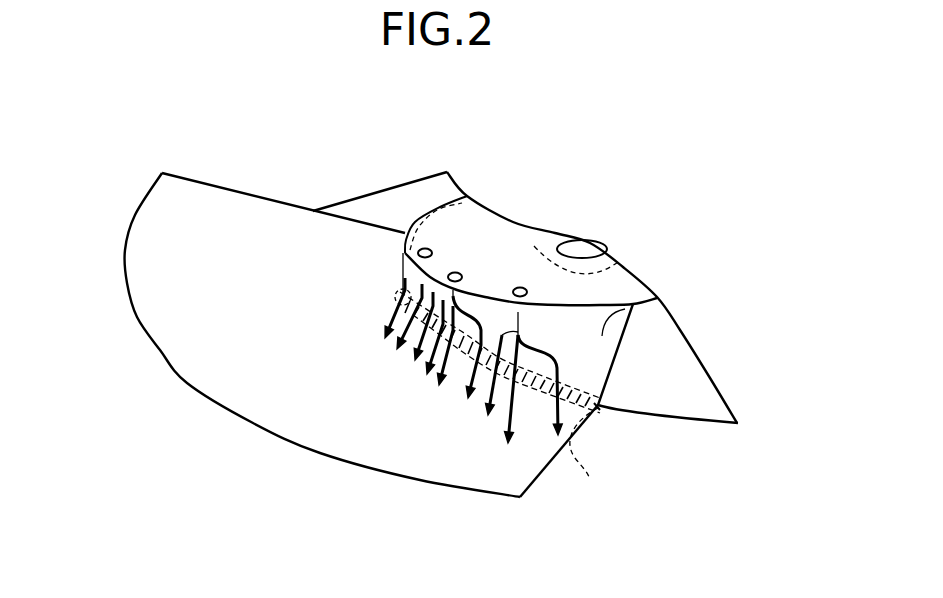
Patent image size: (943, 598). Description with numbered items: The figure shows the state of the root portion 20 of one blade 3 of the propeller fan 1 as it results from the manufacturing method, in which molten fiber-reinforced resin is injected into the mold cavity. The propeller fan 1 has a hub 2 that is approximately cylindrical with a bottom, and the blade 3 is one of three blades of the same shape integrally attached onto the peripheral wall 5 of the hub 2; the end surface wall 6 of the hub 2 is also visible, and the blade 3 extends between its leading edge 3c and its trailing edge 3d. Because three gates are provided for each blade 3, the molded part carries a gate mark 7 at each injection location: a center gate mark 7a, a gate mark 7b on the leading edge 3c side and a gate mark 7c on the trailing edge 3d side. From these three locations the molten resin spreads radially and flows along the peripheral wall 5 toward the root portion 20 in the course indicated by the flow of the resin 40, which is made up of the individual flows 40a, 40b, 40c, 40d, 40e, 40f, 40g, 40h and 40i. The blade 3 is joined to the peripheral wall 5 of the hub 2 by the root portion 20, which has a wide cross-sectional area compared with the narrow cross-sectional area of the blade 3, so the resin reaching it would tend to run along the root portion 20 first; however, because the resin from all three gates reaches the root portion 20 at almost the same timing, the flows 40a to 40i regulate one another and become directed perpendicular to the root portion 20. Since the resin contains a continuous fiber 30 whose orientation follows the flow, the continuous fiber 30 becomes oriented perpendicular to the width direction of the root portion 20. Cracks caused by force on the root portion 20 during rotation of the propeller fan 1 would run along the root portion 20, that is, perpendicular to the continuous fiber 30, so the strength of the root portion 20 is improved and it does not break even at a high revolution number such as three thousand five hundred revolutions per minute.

The propeller fan 1 is at (235, 174).
The hub 2 is at (600, 352).
The blade 3 is at (242, 360).
The leading edge 3c is at (538, 480).
The trailing edge 3d is at (282, 200).
The peripheral wall 5 is at (637, 307).
The end surface wall 6 is at (550, 280).
The gate mark 7 is at (517, 138).
The gate mark 7a is at (455, 271).
The gate mark 7b is at (520, 286).
The gate mark 7c is at (425, 246).
The root portion 20 is at (586, 456).
The continuous fiber 30 is at (597, 417).
The flow of the resin 40 is at (404, 283).
The flow of the resin 40a is at (396, 328).
The flow of the resin 40b is at (387, 347).
The flow of the resin 40c is at (410, 357).
The flow of the resin 40d is at (421, 373).
The flow of the resin 40e is at (431, 384).
The flow of the resin 40f is at (460, 398).
The flow of the resin 40g is at (486, 405).
The flow of the resin 40h is at (518, 410).
The flow of the resin 40i is at (560, 383).